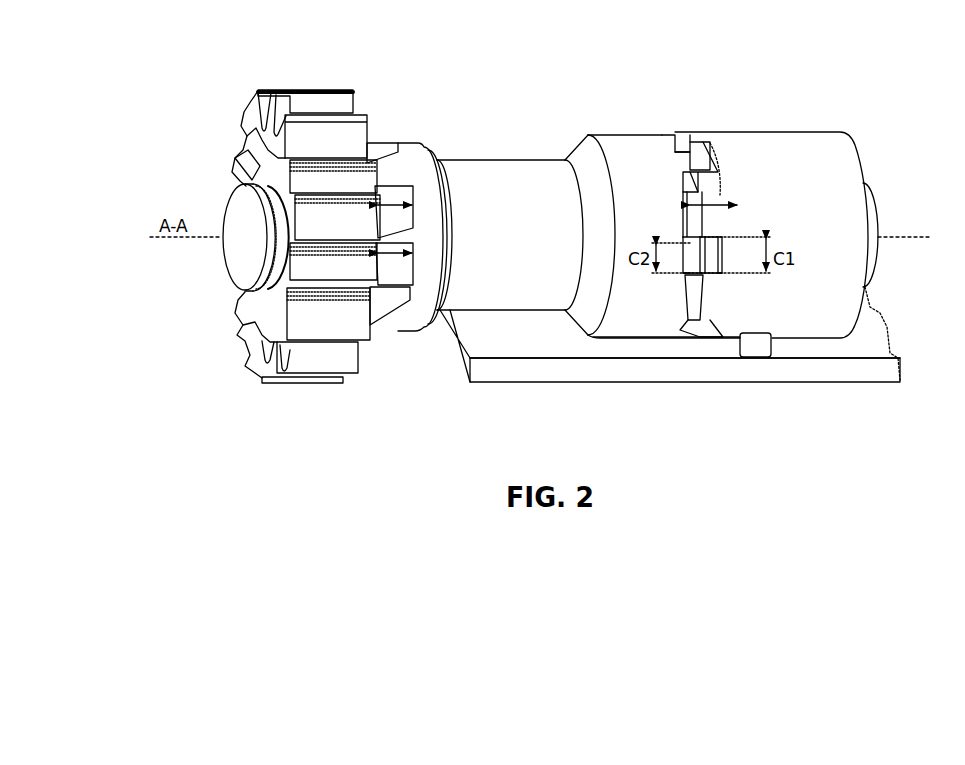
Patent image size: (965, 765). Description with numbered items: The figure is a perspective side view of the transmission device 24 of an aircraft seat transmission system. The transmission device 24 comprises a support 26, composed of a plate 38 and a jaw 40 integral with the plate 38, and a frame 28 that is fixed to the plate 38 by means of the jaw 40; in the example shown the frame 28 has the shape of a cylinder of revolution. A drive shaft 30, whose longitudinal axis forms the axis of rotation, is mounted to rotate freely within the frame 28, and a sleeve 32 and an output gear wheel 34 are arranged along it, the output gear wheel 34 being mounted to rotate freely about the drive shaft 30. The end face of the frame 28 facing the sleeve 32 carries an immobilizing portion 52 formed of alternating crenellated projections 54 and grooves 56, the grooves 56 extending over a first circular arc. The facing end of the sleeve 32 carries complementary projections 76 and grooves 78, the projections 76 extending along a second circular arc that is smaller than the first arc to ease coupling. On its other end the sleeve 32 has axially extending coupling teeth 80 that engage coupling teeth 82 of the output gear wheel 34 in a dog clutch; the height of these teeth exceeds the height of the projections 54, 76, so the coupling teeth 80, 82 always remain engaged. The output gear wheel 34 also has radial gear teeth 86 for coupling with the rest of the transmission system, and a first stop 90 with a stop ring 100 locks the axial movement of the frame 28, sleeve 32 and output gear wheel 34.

The transmission device 24 is at (675, 407).
The support 26 is at (862, 388).
The frame 28 is at (763, 153).
The drive shaft 30 is at (230, 262).
The sleeve 32 is at (497, 193).
The output gear wheel 34 is at (300, 377).
The plate 38 is at (802, 367).
The jaw 40 is at (755, 350).
The immobilizing portion 52 is at (695, 120).
The projections 54 is at (715, 225).
The grooves 56 is at (707, 272).
The projections 76 is at (690, 257).
The grooves 78 is at (684, 190).
The coupling teeth 80 is at (388, 158).
The coupling teeth 82 is at (387, 298).
The gear teeth 86 is at (295, 106).
The first stop 90 is at (248, 180).
The stop ring 100 is at (255, 177).